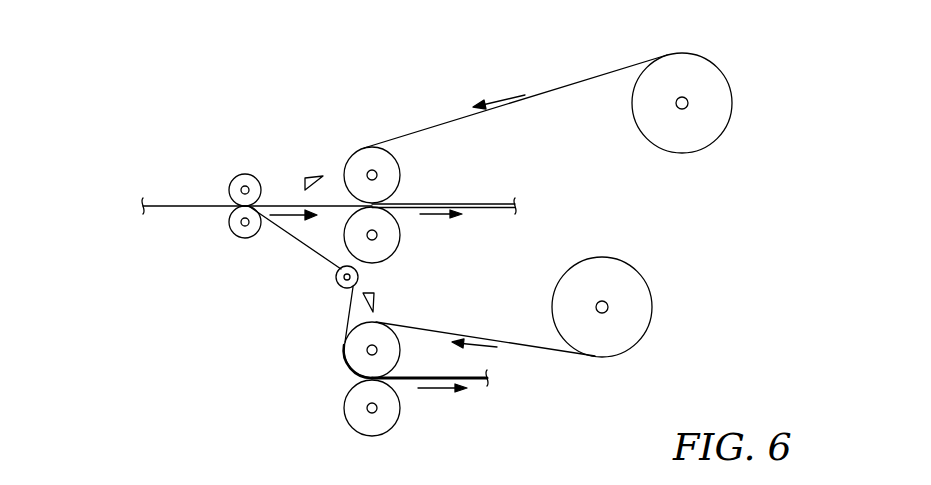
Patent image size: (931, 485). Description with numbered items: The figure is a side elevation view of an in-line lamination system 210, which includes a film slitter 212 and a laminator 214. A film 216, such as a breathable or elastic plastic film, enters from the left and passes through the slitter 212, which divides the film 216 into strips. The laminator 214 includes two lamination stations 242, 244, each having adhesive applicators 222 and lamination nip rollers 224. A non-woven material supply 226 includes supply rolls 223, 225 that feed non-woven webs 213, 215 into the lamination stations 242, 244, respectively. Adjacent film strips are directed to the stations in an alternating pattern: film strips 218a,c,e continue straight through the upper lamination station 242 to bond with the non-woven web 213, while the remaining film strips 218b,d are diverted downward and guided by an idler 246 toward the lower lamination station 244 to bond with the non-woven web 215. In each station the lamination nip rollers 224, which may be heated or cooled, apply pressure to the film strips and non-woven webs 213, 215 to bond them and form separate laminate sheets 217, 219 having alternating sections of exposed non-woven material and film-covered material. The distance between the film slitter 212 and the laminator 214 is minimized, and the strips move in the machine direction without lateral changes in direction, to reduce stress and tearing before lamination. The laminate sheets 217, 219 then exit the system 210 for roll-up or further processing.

The in-line lamination system 210 is at (148, 102).
The film slitter 212 is at (233, 177).
The non-woven web 213 is at (560, 87).
The laminator 214 is at (372, 130).
The non-woven web 215 is at (540, 350).
The film 216 is at (167, 203).
The laminate sheet 217 is at (480, 202).
The film strips 218a,c,e is at (288, 203).
The film strips 218b,d is at (298, 238).
The laminate sheet 219 is at (473, 382).
The adhesive applicator 222 is at (318, 177).
The supply roll 223 is at (735, 87).
The lamination nip rollers 224 is at (407, 168).
The supply roll 225 is at (652, 288).
The non-woven material supply 226 is at (717, 57).
The lamination station 242 is at (418, 185).
The lamination station 244 is at (467, 322).
The idler 246 is at (334, 283).